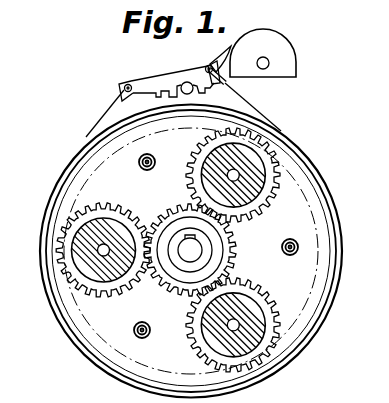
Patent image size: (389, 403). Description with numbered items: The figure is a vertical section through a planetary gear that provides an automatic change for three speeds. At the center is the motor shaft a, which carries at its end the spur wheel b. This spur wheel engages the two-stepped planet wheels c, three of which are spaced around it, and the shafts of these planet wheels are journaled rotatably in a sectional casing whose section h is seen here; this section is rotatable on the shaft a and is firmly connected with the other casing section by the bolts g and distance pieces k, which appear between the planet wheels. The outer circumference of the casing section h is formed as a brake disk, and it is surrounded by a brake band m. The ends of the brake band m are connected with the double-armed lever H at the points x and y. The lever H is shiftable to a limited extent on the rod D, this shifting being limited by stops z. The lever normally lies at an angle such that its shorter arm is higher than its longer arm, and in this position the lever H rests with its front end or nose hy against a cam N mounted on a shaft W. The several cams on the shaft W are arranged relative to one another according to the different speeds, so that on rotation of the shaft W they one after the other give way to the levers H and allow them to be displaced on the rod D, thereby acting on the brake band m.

The casing section h is at (301, 171).
The brake band m is at (262, 115).
The motor shaft a is at (197, 256).
The spur wheel b is at (231, 257).
The planet wheel c is at (110, 216).
The distance piece k is at (147, 158).
The bolt g is at (217, 241).
The double-armed lever H is at (182, 84).
The rod D is at (193, 90).
The stop z is at (159, 72).
The connection point x is at (121, 84).
The connection point y is at (206, 67).
The nose hy is at (217, 53).
The cam N is at (299, 53).
The shaft W is at (267, 68).